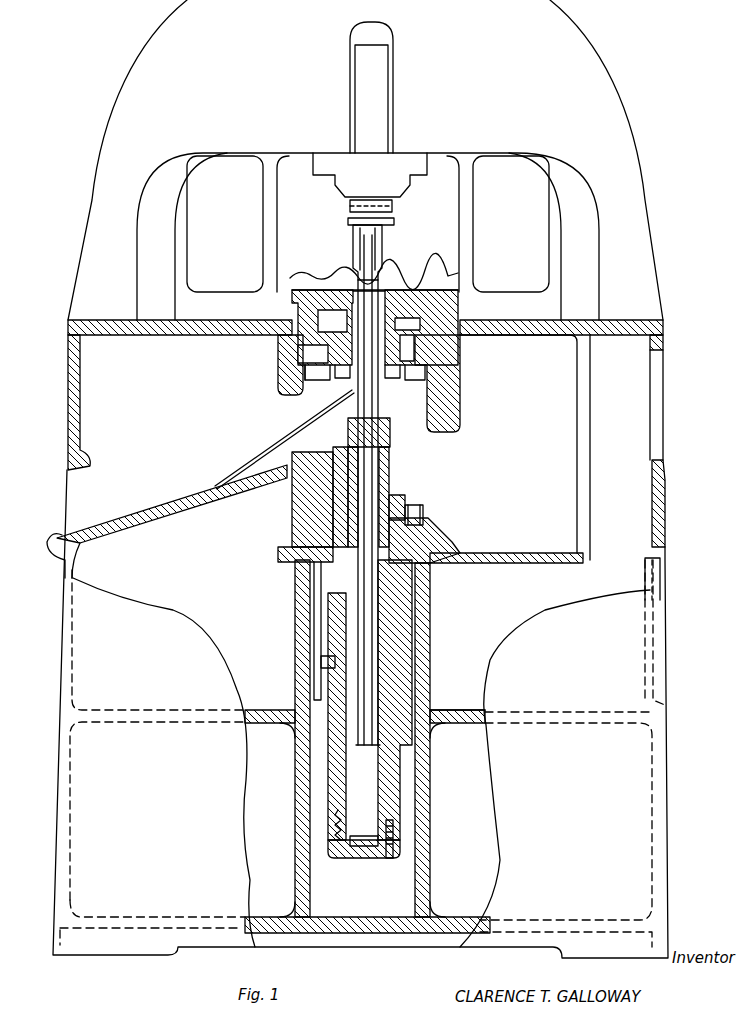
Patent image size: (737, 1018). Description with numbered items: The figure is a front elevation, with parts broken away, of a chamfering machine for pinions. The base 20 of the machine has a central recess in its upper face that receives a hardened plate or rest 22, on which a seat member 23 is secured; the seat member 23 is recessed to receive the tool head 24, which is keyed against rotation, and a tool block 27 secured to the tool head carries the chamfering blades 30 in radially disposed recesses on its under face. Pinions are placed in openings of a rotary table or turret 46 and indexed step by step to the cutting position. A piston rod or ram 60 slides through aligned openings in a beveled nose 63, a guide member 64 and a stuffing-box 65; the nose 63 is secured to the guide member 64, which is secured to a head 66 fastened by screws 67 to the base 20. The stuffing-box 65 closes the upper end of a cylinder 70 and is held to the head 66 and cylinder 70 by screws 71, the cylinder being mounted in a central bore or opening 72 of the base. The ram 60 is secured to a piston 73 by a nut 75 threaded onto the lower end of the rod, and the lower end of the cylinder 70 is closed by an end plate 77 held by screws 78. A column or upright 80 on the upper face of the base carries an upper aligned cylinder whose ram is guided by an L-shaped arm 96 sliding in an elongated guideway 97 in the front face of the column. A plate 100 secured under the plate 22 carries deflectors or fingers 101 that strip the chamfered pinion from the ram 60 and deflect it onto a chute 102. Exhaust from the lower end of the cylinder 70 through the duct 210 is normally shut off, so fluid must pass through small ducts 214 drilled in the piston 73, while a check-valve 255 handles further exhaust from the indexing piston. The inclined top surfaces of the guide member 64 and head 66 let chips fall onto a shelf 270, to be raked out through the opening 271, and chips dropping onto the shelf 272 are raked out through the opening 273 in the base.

The base 20 is at (660, 748).
The plate or rest 22 is at (280, 360).
The seat member 23 is at (458, 342).
The tool head 24 is at (290, 305).
The tool block 27 is at (350, 310).
The chamfering blades 30 is at (405, 290).
The rotary table or turret 46 is at (433, 282).
The piston rod or ram 60 is at (370, 485).
The beveled nose 63 is at (385, 437).
The guide member 64 is at (388, 460).
The stuffing-box 65 is at (300, 522).
The head 66 is at (310, 498).
The screws 67 is at (415, 525).
The cylinder 70 is at (390, 628).
The screws 71 is at (395, 520).
The central bore or opening 72 is at (322, 882).
The piston 73 is at (398, 600).
The nut 75 is at (372, 745).
The end plate 77 is at (370, 858).
The screws 78 is at (392, 858).
The column or upright 80 is at (600, 73).
The L-shaped arm 96 is at (378, 130).
The guideway 97 is at (380, 30).
The plate 100 is at (292, 380).
The deflectors or fingers 101 is at (390, 380).
The chute 102 is at (192, 488).
The duct 210 is at (330, 797).
The ducts 214 is at (383, 690).
The check-valve 255 is at (325, 578).
The shelf 270 is at (540, 560).
The opening 271 is at (660, 412).
The shelf 272 is at (455, 712).
The opening 273 is at (658, 583).